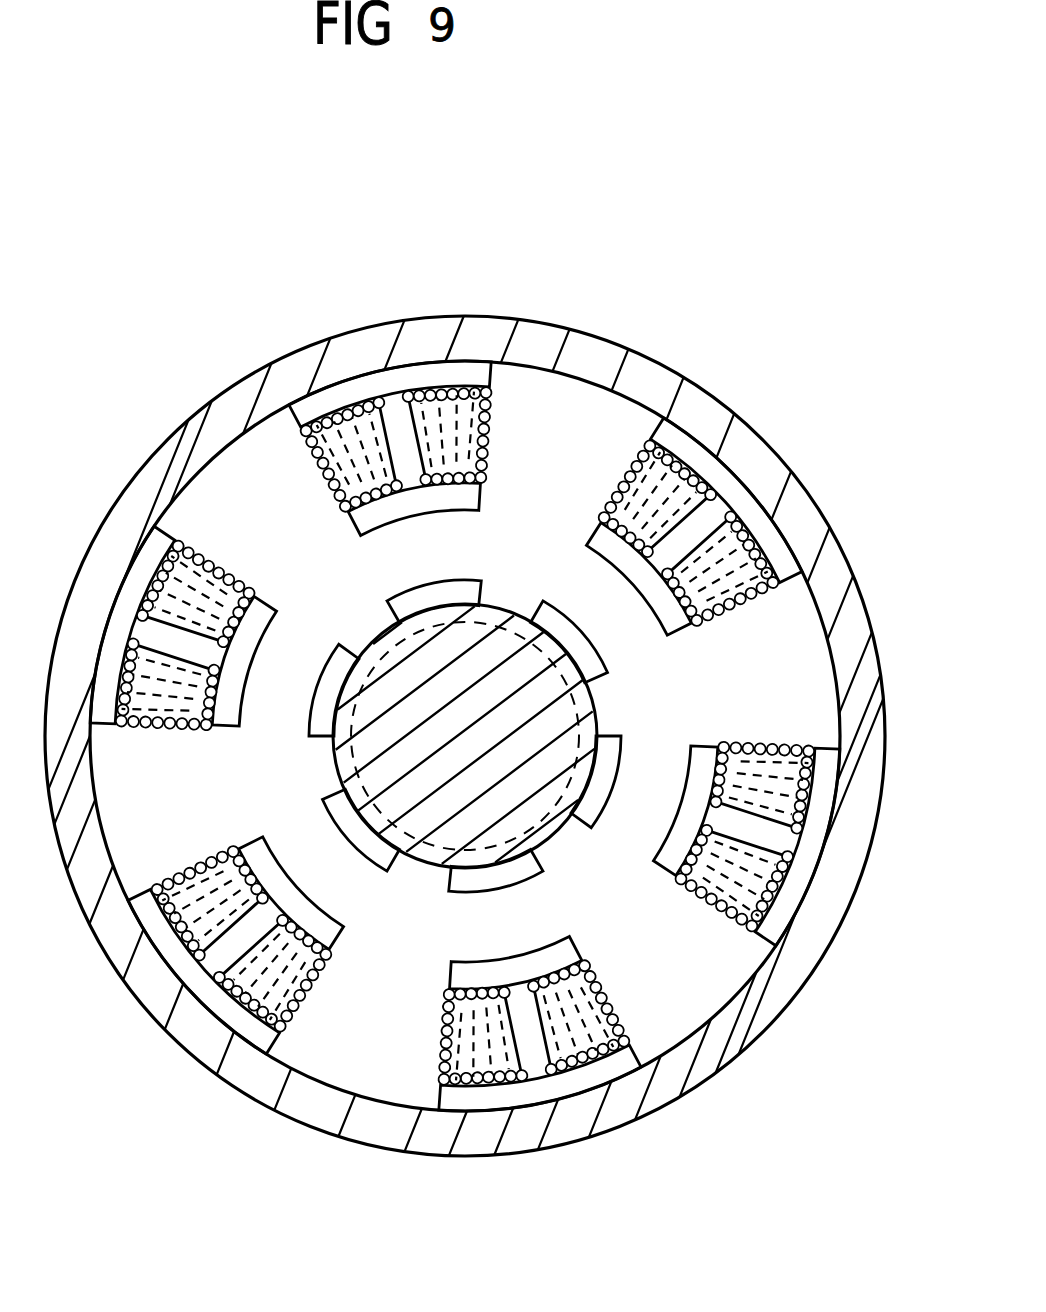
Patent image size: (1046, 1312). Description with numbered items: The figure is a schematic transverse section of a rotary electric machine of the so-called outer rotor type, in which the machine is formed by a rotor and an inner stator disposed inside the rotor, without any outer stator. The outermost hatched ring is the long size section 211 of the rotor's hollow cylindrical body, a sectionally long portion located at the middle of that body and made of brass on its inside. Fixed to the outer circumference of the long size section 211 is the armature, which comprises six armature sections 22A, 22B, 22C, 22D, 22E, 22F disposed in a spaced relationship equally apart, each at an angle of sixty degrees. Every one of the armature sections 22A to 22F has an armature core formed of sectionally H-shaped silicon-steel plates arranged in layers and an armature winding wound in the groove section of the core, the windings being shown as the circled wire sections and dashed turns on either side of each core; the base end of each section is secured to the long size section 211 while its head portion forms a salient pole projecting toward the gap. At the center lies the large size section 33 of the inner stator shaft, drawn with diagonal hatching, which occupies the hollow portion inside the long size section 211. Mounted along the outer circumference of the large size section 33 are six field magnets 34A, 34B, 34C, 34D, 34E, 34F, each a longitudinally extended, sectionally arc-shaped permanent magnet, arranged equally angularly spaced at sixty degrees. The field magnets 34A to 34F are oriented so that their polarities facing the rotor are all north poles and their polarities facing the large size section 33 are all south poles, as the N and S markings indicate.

The long size section 211 is at (593, 351).
The large size section 33 is at (490, 650).
The field magnet 34A is at (447, 593).
The field magnet 34B is at (596, 668).
The field magnet 34C is at (593, 822).
The field magnet 34D is at (460, 858).
The field magnet 34E is at (334, 812).
The field magnet 34F is at (343, 658).
The armature section 22A is at (316, 493).
The armature section 22B is at (591, 503).
The armature section 22C is at (731, 734).
The armature section 22D is at (604, 967).
The armature section 22E is at (333, 969).
The armature section 22F is at (210, 743).